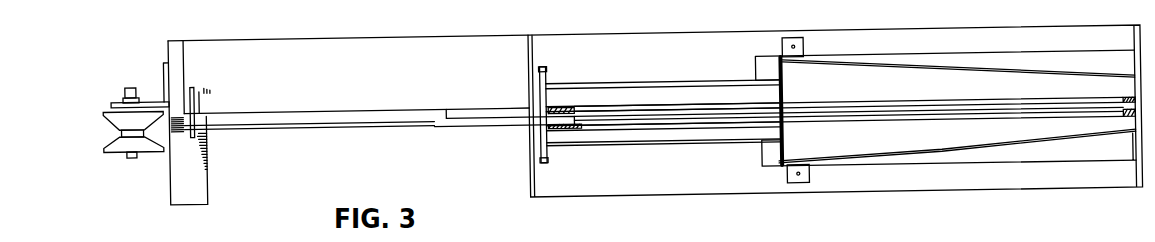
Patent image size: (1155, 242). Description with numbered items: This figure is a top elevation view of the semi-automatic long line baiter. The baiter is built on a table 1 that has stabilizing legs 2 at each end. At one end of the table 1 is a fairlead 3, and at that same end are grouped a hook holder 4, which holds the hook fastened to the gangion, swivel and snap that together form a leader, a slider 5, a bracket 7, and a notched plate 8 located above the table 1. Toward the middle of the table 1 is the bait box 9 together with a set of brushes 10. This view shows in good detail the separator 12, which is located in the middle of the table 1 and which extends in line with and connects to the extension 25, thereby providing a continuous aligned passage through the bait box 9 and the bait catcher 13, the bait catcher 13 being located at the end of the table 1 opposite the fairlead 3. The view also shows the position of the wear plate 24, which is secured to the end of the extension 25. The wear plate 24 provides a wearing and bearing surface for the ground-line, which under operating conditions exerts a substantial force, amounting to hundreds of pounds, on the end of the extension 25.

The table 1 is at (911, 35).
The stabilizing legs 2 is at (205, 186).
The fairlead 3 is at (152, 146).
The hook holder 4 is at (253, 125).
The slider 5 is at (448, 128).
The bracket 7 is at (239, 44).
The notched plate 8 is at (194, 93).
The bait box 9 is at (655, 96).
The brushes 10 is at (546, 75).
The separator 12 is at (618, 127).
The bait catcher 13 is at (1022, 78).
The wear plate 24 is at (1132, 127).
The extension 25 is at (868, 118).